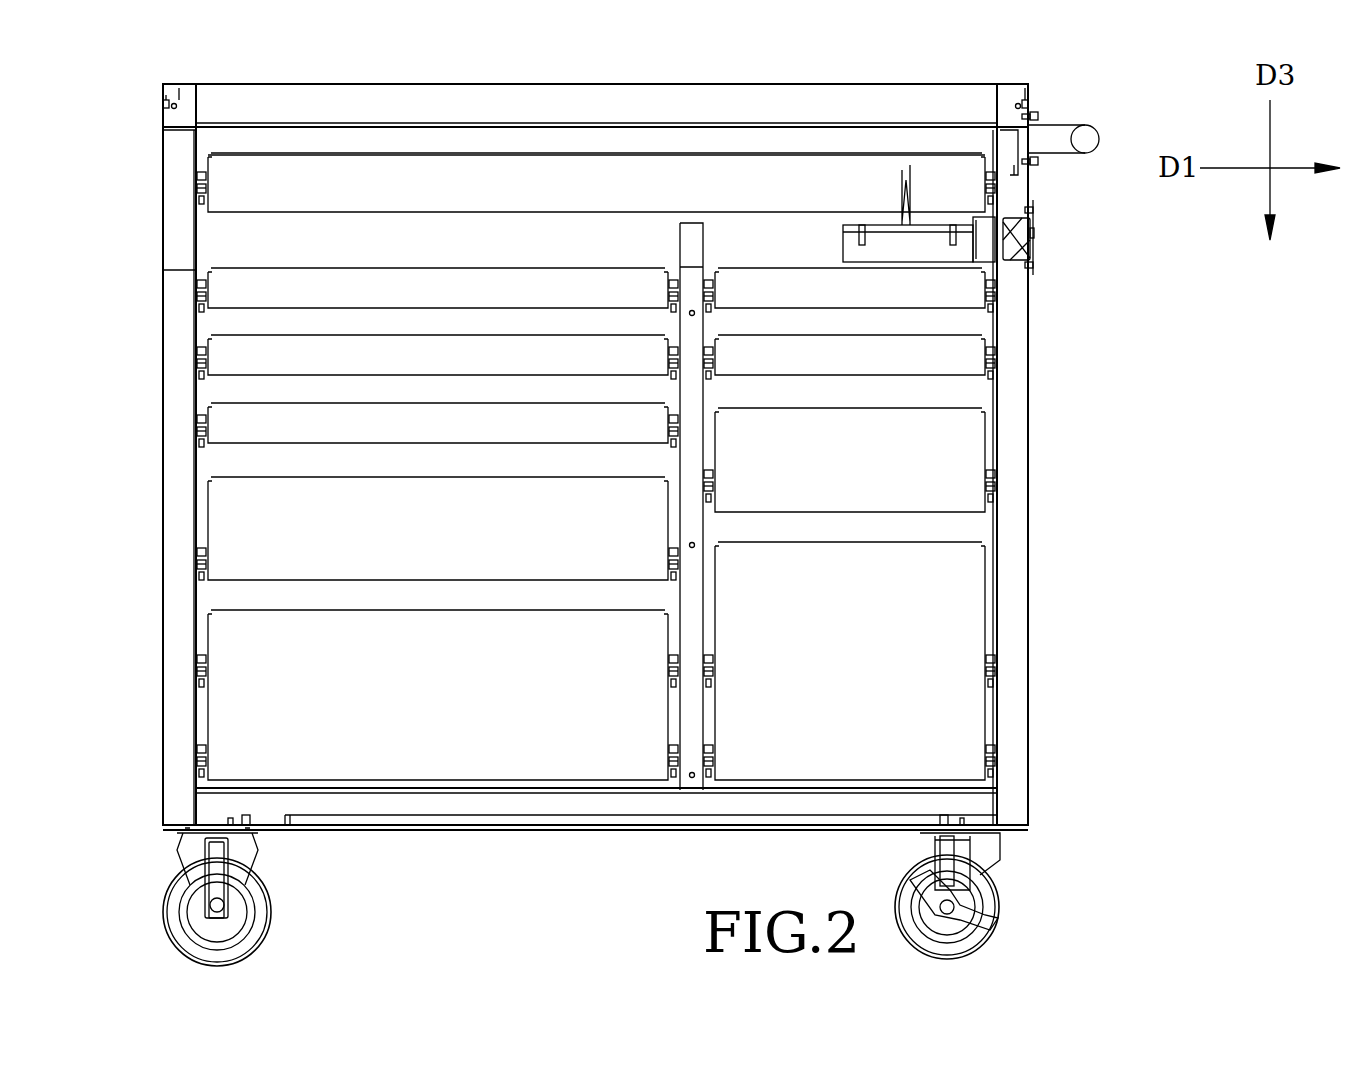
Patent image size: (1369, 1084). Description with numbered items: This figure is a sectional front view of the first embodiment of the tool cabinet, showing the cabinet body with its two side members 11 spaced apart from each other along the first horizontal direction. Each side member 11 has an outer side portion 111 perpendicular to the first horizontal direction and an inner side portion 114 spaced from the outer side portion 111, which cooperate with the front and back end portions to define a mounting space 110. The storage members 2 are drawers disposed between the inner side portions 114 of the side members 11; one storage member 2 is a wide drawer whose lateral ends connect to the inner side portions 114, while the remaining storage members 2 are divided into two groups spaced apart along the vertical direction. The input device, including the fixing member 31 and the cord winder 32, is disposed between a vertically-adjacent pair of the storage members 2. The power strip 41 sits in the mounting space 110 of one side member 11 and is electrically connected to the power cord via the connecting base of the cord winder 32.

The storage member 2 is at (878, 153).
The side member 11 is at (163, 543).
The mounting space 110 is at (1017, 500).
The outer side portion 111 is at (1028, 575).
The inner side portion 114 is at (1000, 625).
The fixing member 31 is at (985, 263).
The cord winder 32 is at (933, 265).
The power strip 41 is at (1012, 224).